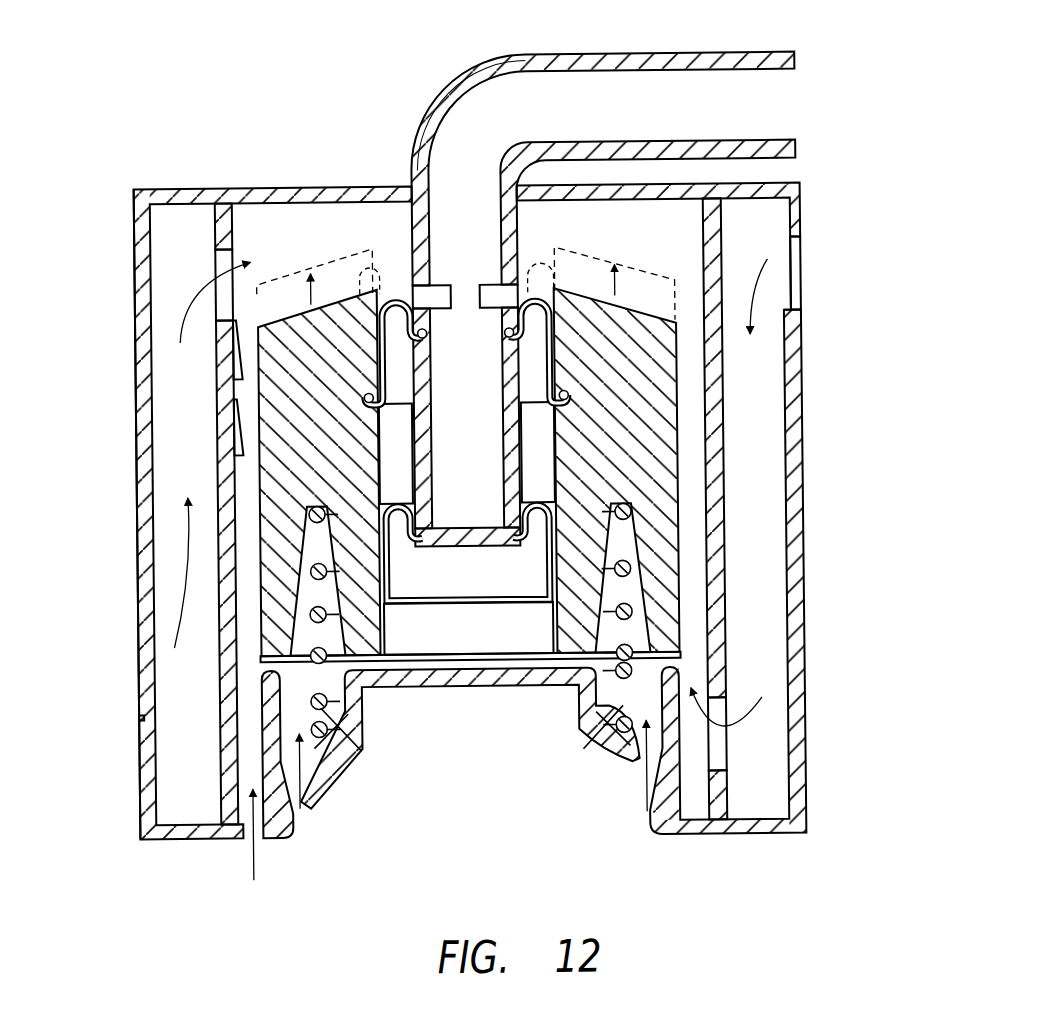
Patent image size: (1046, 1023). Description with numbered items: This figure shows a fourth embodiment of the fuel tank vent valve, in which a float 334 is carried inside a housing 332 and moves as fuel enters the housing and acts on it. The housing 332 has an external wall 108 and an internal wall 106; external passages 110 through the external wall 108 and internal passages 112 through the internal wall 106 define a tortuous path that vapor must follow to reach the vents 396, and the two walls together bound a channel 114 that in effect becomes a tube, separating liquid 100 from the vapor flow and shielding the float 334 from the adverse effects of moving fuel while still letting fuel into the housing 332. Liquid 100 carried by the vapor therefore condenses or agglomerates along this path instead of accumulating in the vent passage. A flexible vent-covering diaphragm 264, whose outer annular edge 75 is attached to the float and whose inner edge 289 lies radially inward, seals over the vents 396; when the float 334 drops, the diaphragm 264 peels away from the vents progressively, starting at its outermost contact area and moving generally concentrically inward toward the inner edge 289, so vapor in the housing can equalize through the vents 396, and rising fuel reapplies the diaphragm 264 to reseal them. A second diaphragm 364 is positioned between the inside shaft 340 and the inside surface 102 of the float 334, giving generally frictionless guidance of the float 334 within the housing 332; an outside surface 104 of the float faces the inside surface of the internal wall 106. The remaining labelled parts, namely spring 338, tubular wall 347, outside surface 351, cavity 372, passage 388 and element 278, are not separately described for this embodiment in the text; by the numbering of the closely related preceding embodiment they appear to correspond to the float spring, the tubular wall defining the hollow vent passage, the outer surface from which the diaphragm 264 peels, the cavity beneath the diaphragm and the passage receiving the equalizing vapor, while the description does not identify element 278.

The outer annular edge 75 is at (568, 396).
The liquid 100 is at (240, 371).
The inside surface 102 is at (556, 632).
The outside surface 104 is at (259, 628).
The internal wall 106 is at (217, 722).
The external wall 108 is at (138, 490).
The external passages 110 is at (140, 713).
The internal passages 112 is at (226, 262).
The channel 114 is at (751, 485).
The diaphragm 264 is at (389, 287).
The second seal 278 is at (400, 283).
The inner edge 289 is at (506, 338).
The housing 332 is at (130, 583).
The float 334 is at (250, 407).
The lower housing 338 is at (346, 738).
The inside shaft 340 is at (508, 433).
The housing top wall 347 is at (523, 239).
The tube liner 351 is at (398, 195).
The second diaphragm 364 is at (395, 517).
The piston 372 is at (401, 632).
The outlet conduit 388 is at (468, 152).
The vents 396 is at (499, 293).